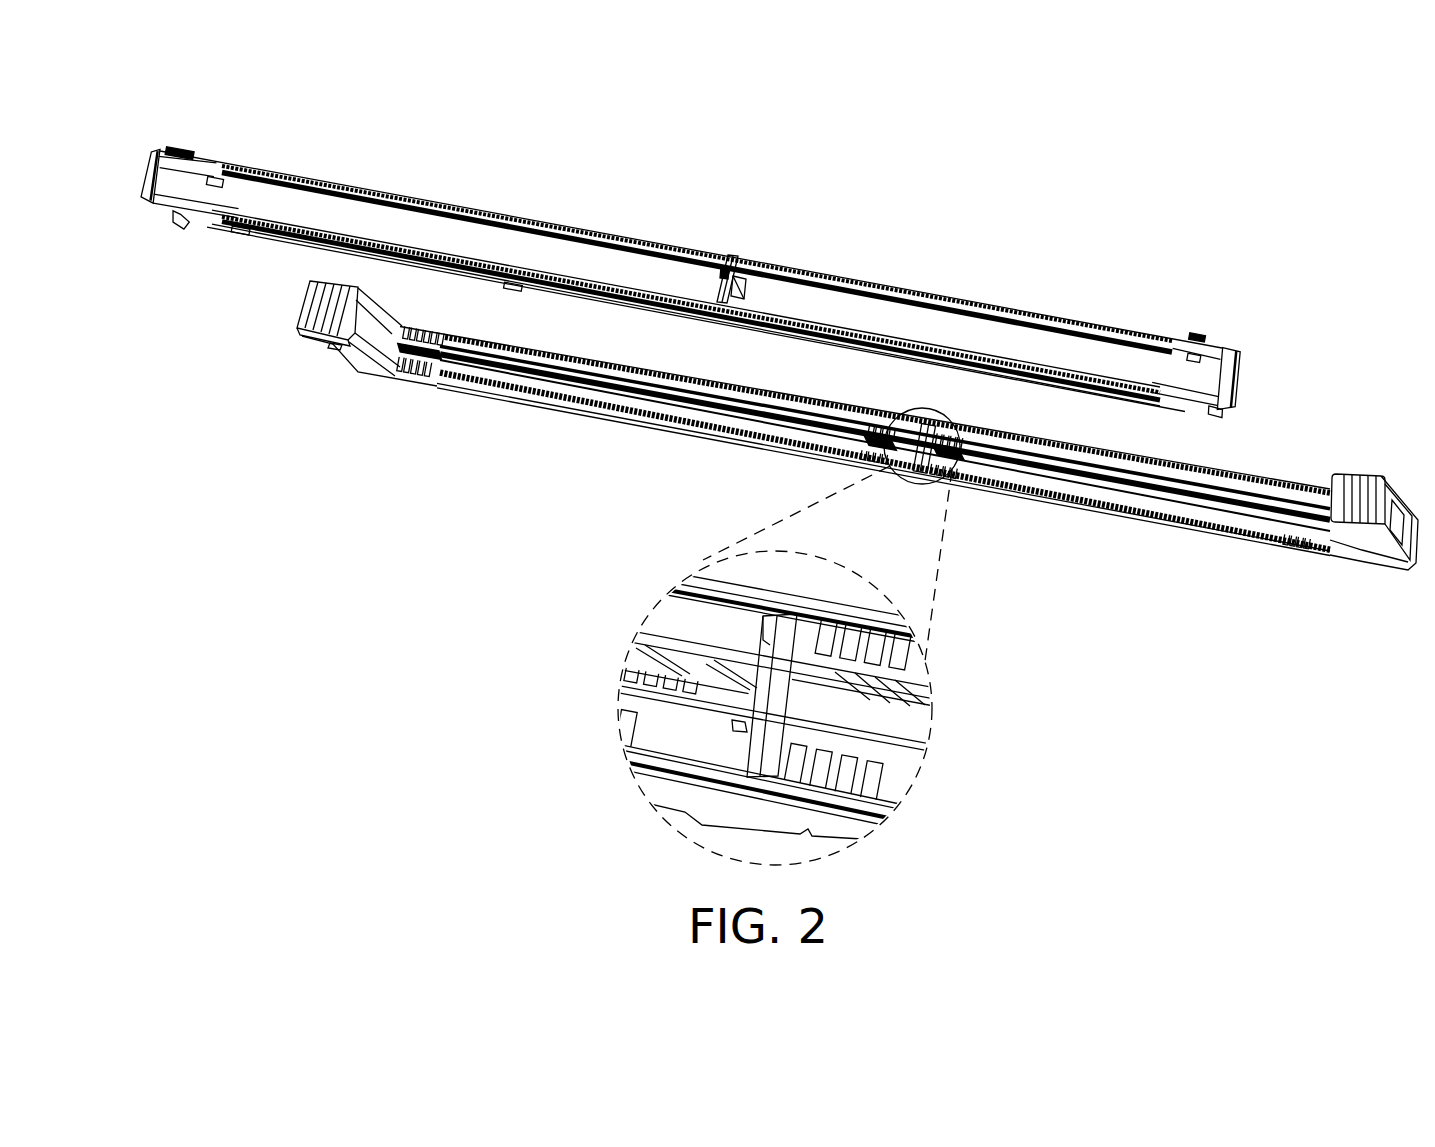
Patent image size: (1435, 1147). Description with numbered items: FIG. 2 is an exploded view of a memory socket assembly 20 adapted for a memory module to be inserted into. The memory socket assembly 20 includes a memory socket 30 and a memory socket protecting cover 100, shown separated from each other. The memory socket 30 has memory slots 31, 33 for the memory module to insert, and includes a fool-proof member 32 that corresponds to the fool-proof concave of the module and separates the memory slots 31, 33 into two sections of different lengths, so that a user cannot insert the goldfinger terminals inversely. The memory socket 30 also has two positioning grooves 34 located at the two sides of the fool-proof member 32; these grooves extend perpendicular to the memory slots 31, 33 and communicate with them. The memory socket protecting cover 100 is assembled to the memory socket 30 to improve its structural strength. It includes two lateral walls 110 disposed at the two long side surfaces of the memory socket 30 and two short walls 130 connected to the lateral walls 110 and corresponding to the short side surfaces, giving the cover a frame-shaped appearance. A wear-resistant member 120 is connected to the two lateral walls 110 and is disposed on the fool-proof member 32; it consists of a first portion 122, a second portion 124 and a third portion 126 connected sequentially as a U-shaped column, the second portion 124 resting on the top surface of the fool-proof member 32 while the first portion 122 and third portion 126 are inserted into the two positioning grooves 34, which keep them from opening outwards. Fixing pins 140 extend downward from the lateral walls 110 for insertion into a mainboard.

The memory socket assembly 20 is at (1383, 865).
The memory socket 30 is at (1299, 481).
The memory slot 31 is at (647, 396).
The fool-proof member 32 is at (778, 702).
The memory slot 33 is at (1137, 490).
The positioning groove 34 is at (729, 729).
The memory socket protecting cover 100 is at (1186, 297).
The lateral wall 110 is at (1006, 306).
The wear-resistant member 120 is at (828, 198).
The first portion 122 is at (721, 280).
The second portion 124 is at (747, 280).
The third portion 126 is at (748, 276).
The short wall 130 is at (150, 156).
The fixing pin 140 is at (183, 226).